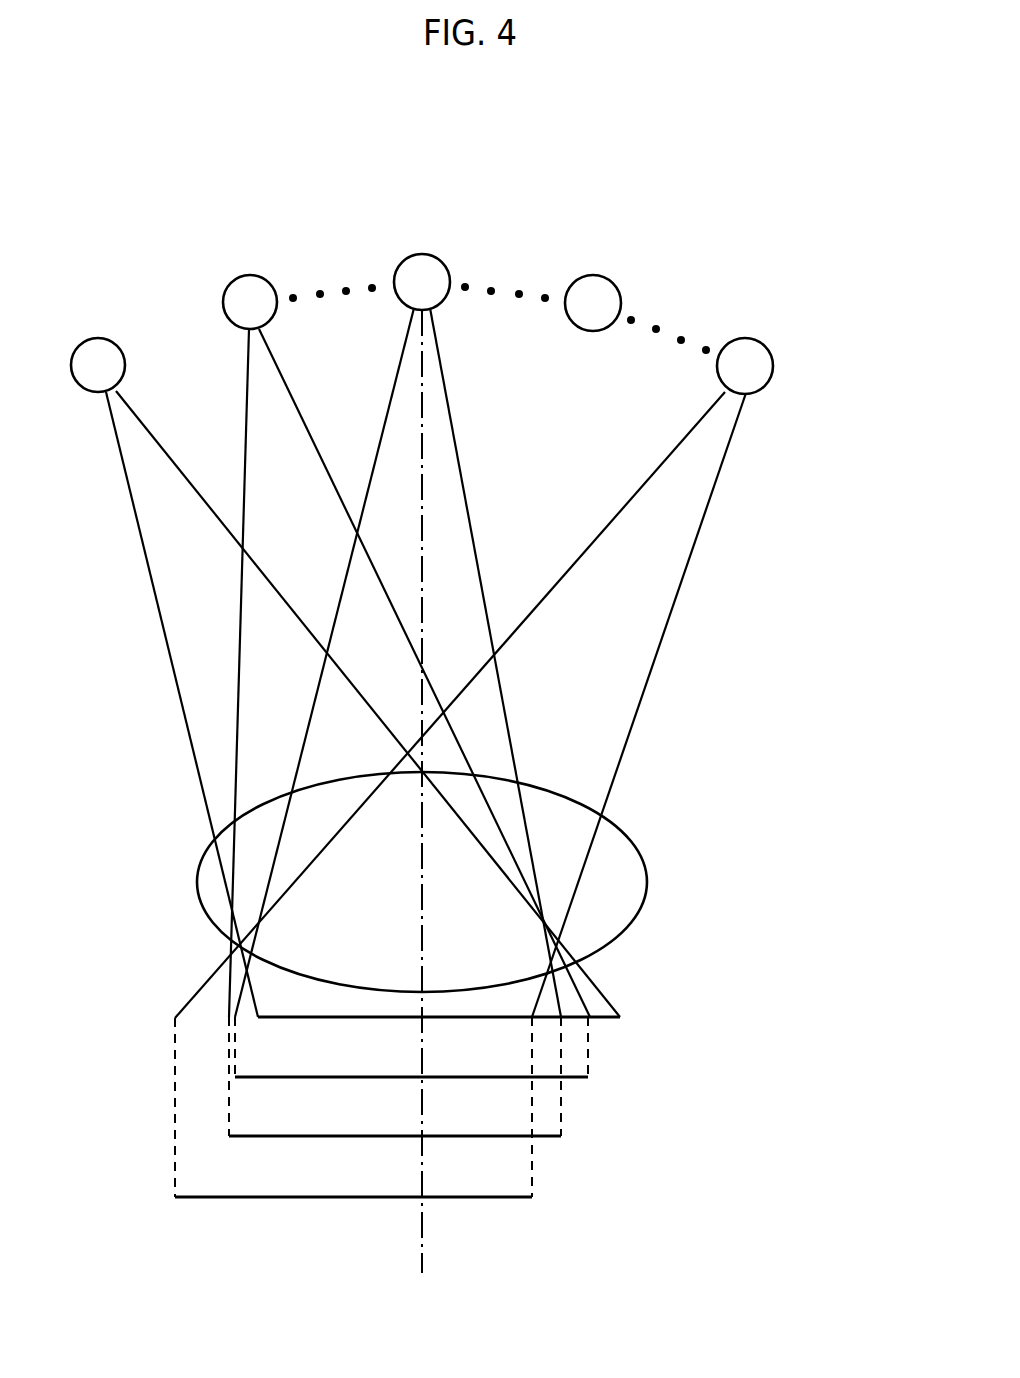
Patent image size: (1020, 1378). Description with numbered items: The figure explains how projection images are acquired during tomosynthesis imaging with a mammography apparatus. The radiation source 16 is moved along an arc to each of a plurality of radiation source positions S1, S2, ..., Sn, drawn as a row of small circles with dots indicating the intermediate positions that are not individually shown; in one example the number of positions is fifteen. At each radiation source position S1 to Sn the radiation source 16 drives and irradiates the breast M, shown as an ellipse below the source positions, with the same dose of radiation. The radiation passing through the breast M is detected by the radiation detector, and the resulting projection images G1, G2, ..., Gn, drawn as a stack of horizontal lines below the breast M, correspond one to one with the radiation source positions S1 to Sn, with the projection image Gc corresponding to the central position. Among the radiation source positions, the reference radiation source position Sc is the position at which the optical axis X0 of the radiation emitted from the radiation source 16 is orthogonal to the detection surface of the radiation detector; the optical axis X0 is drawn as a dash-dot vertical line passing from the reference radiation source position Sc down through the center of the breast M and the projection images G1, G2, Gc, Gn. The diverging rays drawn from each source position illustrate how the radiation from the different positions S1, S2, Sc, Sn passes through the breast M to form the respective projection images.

The radiation source 16 is at (477, 306).
The radiation source position S1 is at (98, 347).
The radiation source position S2 is at (250, 284).
The reference radiation source position Sc is at (422, 264).
The radiation source position Sn is at (745, 347).
The optical axis X0 is at (422, 463).
The breast M is at (642, 845).
The projection image G1 is at (620, 1017).
The projection image G2 is at (588, 1077).
The projection image Gc is at (561, 1136).
The projection image Gn is at (495, 1197).